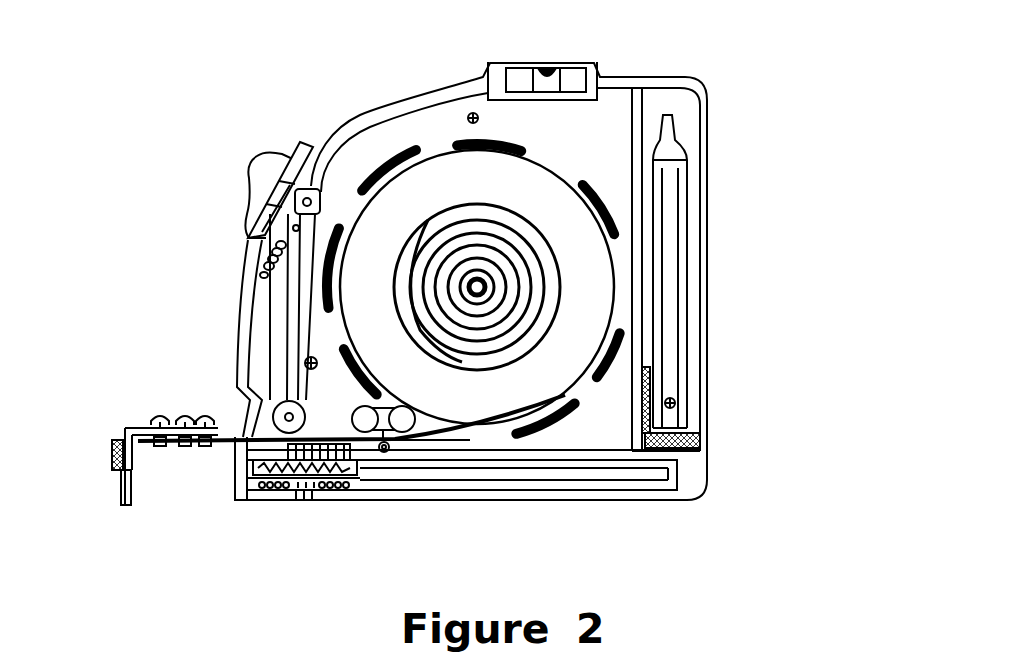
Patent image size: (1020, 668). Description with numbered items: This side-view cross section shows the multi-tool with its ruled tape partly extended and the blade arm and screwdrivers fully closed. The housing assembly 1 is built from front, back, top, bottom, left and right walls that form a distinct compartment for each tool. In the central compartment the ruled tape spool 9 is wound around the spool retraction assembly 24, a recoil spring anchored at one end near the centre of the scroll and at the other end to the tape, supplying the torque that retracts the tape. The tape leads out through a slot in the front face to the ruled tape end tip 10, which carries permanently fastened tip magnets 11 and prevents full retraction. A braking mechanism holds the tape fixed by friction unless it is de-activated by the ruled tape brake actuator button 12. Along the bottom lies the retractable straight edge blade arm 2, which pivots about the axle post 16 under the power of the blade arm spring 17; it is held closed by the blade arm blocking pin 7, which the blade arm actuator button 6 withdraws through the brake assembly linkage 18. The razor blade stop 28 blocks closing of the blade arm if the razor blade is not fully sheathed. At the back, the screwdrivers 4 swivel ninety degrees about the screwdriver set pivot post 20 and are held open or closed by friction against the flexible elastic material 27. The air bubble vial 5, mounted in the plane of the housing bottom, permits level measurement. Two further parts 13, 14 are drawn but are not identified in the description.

The housing assembly 1 is at (350, 118).
The straight edge blade arm 2 is at (552, 492).
The retractable screwdrivers 4 is at (690, 198).
The air bubble in sealed liquid vial 5 is at (568, 60).
The blade arm actuator button 6 is at (351, 414).
The blade arm blocking pin 7 is at (280, 466).
The ruled tape spool 9 is at (614, 266).
The ruled tape end tip 10 is at (126, 508).
The tip magnets 11 is at (108, 430).
The ruled tape brake actuator button 12 is at (258, 170).
The lever arm 13 is at (268, 320).
The return spring 14 is at (256, 247).
The axle centerline and post 16 is at (315, 506).
The blade arm spring 17 is at (270, 492).
The brake assembly linkage 18 is at (391, 452).
The screwdriver set pivot post 20 is at (676, 403).
The spool retraction assembly 24 is at (510, 240).
The flexible elastic material 27 is at (688, 452).
The razor blade stop 28 is at (592, 396).